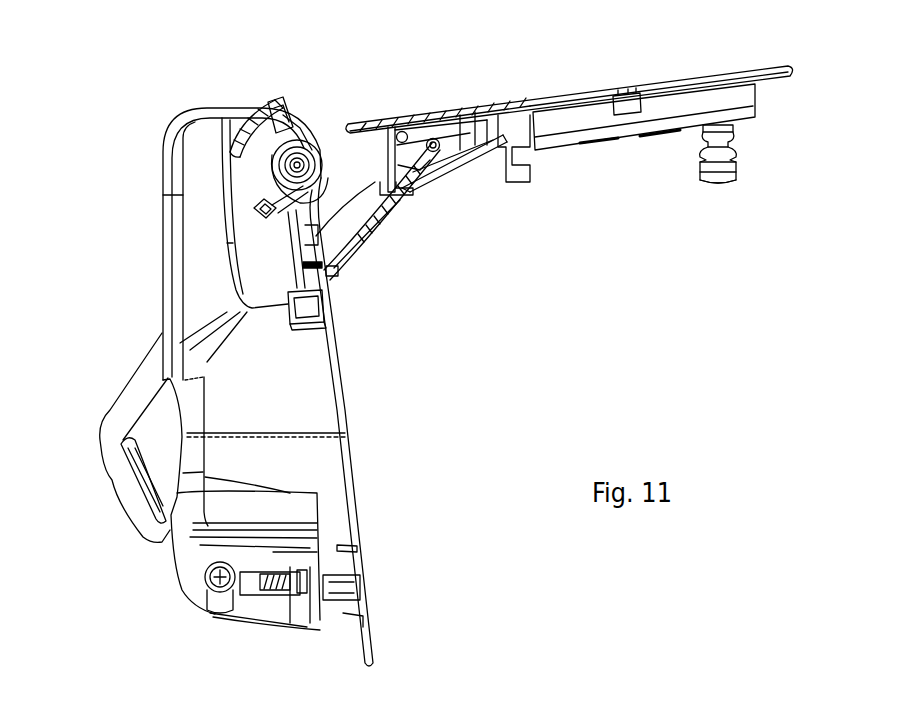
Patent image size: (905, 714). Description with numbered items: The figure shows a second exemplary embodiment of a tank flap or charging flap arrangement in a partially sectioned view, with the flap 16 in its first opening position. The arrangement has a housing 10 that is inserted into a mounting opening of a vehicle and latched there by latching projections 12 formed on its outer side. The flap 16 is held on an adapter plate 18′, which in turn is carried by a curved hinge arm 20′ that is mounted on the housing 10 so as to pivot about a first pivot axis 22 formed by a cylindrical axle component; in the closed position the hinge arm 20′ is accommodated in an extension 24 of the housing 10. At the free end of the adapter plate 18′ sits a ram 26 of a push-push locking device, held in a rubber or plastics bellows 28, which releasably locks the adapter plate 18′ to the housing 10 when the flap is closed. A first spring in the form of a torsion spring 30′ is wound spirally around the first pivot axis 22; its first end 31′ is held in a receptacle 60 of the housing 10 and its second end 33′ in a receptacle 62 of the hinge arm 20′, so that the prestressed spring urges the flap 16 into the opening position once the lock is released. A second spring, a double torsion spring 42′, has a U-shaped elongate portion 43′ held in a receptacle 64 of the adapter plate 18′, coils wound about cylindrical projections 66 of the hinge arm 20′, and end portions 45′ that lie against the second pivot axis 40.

The housing 10 is at (210, 518).
The latching projection 12 is at (288, 305).
The flap 16 is at (660, 82).
The adapter plate 18′ is at (735, 101).
The hinge arm 20′ is at (365, 262).
The first pivot axis 22 is at (297, 147).
The extension 24 is at (200, 170).
The ram 26 is at (717, 182).
The bellows 28 is at (737, 150).
The torsion spring 30′ is at (323, 157).
The first end of the torsion spring 31′ is at (255, 112).
The second end of the torsion spring 33′ is at (318, 196).
The second pivot axis 40 is at (400, 131).
The double torsion spring 42′ is at (440, 133).
The U-shaped elongate portion 43′ is at (470, 133).
The end portion 45′ is at (417, 143).
The receptacle of the housing 60 is at (270, 102).
The receptacle of the hinge arm 62 is at (256, 215).
The receptacle of the adapter plate 64 is at (473, 117).
The cylindrical projection 66 is at (433, 138).